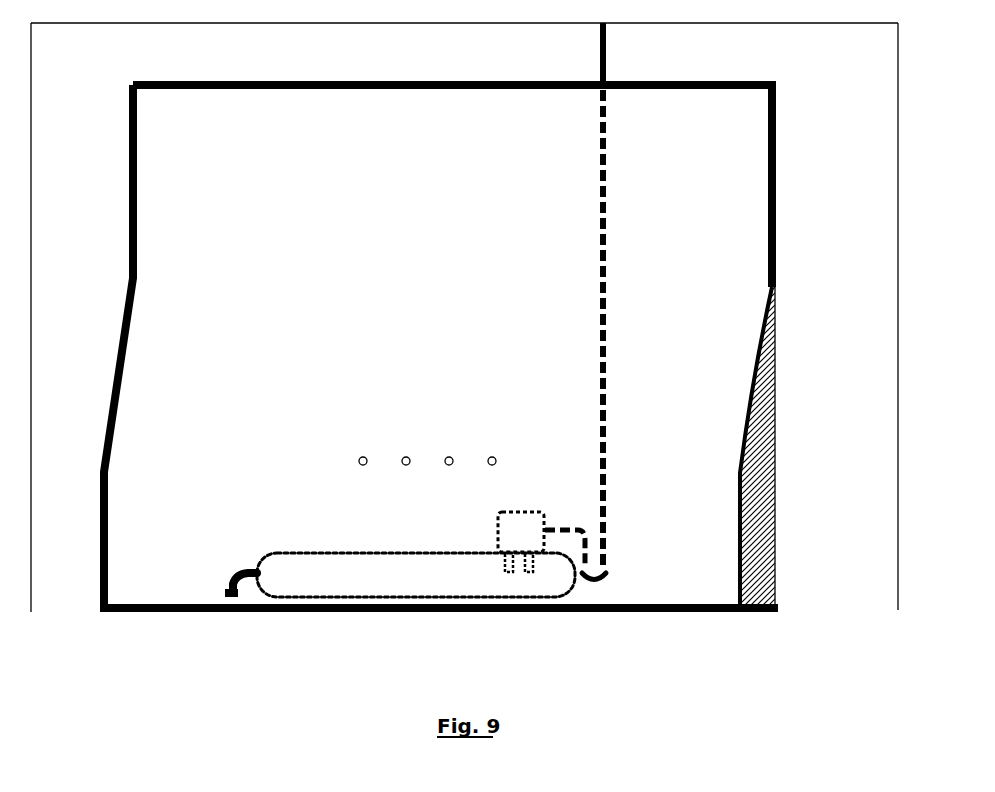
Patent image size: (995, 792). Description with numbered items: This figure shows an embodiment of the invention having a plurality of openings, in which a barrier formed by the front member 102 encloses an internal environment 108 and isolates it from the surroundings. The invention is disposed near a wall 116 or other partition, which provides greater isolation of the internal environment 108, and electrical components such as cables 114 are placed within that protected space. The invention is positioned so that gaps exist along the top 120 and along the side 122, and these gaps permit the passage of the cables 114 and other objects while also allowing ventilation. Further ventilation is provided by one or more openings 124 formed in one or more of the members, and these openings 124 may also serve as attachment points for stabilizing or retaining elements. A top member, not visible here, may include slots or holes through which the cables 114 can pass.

The front member 102 is at (439, 362).
The internal environment 108 is at (775, 453).
The cables 114 is at (607, 55).
The wall 116 is at (872, 119).
The top 120 is at (414, 70).
The side 122 is at (800, 532).
The openings 124 is at (445, 465).